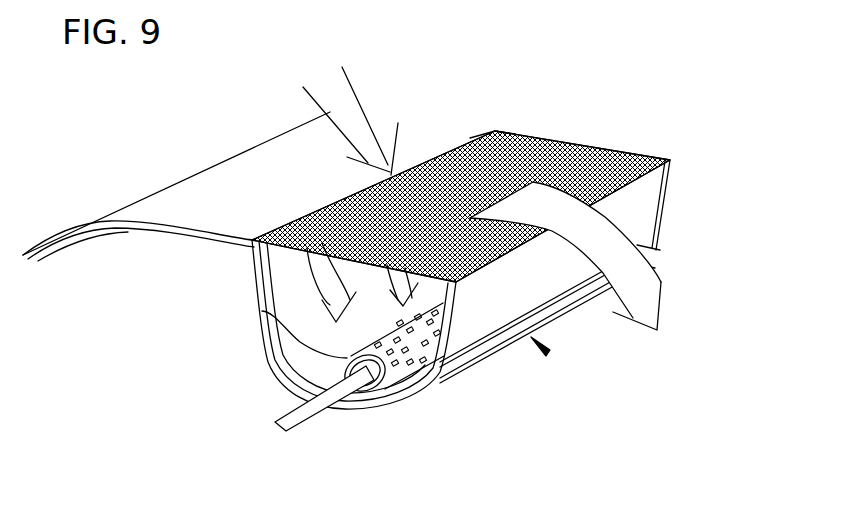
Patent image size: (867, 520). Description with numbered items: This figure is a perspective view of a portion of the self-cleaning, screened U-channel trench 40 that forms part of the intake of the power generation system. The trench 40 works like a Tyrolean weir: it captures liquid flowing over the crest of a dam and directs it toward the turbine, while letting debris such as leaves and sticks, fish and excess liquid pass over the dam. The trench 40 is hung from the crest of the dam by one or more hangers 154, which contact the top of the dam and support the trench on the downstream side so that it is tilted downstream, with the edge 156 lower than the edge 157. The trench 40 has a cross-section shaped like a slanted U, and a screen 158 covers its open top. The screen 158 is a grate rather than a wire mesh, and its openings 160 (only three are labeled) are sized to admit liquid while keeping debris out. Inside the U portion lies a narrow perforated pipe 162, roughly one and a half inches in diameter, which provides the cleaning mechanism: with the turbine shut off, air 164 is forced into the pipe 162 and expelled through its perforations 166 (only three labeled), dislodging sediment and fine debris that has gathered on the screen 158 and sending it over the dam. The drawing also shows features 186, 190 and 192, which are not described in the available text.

The screened U-channel trench 40 is at (547, 352).
The hanger 154 is at (128, 233).
The edge 156 is at (670, 160).
The edge 157 is at (485, 122).
The screen 158 is at (600, 144).
The openings 160 is at (578, 86).
The perforated pipe 162 is at (280, 312).
The air 164 is at (313, 427).
The perforations 166 is at (418, 379).
The rails 186 is at (566, 333).
The flow direction arrows 190 is at (363, 98).
The rotation direction arrow 192 is at (661, 284).